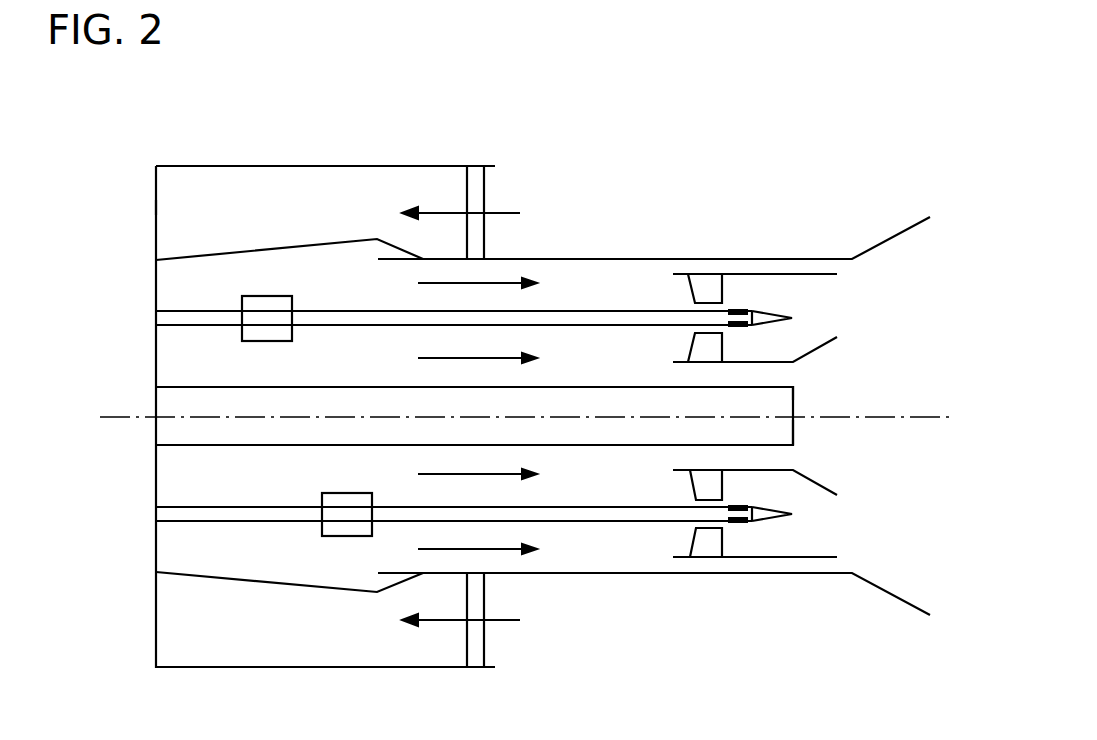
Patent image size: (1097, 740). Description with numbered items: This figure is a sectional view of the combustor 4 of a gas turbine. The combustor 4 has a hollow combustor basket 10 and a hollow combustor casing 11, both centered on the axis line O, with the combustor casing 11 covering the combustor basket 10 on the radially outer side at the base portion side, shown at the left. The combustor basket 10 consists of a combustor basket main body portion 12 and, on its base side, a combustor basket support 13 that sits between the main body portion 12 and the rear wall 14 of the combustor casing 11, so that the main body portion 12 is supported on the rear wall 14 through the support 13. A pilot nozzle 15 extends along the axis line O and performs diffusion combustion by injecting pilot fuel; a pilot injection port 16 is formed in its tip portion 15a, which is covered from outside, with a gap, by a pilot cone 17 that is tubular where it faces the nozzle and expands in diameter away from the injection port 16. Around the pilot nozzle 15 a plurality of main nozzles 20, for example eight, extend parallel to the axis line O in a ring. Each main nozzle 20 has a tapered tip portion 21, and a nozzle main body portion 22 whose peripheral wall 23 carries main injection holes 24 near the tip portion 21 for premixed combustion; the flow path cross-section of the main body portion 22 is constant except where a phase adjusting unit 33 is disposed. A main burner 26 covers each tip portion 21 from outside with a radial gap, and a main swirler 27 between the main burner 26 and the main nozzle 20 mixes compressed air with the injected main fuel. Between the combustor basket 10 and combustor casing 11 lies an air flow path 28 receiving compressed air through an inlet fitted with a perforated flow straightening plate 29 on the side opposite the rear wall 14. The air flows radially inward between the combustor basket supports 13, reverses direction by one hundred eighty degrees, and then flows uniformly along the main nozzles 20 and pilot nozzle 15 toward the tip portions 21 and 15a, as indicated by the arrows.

The combustor 4 is at (781, 155).
The combustor basket 10 is at (700, 258).
The combustor casing 11 is at (210, 166).
The combustor basket main body portion 12 is at (532, 575).
The combustor basket support 13 is at (335, 240).
The rear wall 14 is at (156, 207).
The pilot nozzle 15 is at (208, 400).
The tip portion 15a is at (778, 396).
The pilot injection port 16 is at (793, 430).
The pilot cone 17 is at (817, 481).
The main nozzle 20 is at (556, 318).
The tip portion 21 is at (770, 321).
The nozzle main body portion 22 is at (603, 318).
The peripheral wall 23 is at (650, 318).
The main injection hole 24 is at (735, 311).
The main burner 26 is at (820, 276).
The main swirler 27 is at (708, 292).
The air flow path 28 is at (382, 182).
The flow straightening plate 29 is at (477, 192).
The phase adjusting unit 33 is at (268, 310).
The axis line O is at (128, 417).